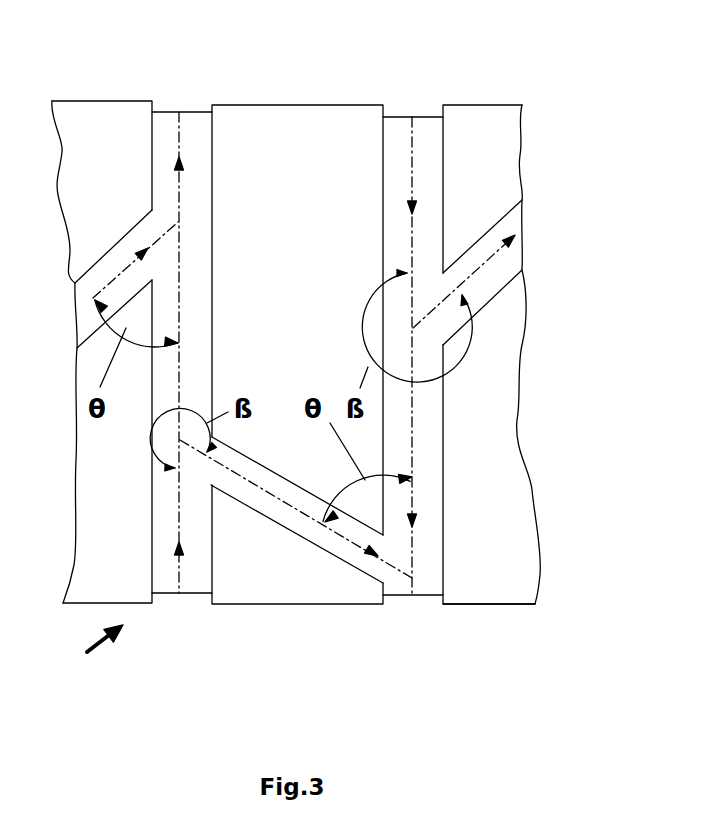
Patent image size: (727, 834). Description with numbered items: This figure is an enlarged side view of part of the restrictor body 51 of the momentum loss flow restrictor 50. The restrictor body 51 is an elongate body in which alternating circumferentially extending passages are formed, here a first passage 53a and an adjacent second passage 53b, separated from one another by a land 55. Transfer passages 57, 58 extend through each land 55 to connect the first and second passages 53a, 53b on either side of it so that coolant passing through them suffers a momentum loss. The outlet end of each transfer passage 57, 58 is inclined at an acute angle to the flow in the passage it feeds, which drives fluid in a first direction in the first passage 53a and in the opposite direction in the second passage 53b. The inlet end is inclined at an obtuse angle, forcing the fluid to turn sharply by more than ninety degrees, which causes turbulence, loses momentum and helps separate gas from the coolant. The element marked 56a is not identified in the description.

The momentum loss flow restrictor 50 is at (88, 653).
The restrictor body 51 is at (486, 610).
The first passage 53a is at (192, 112).
The second passage 53b is at (428, 117).
The land 55 is at (298, 105).
The outer wall 56a is at (97, 100).
The transfer passage 57 is at (98, 262).
The transfer passage 58 is at (318, 563).